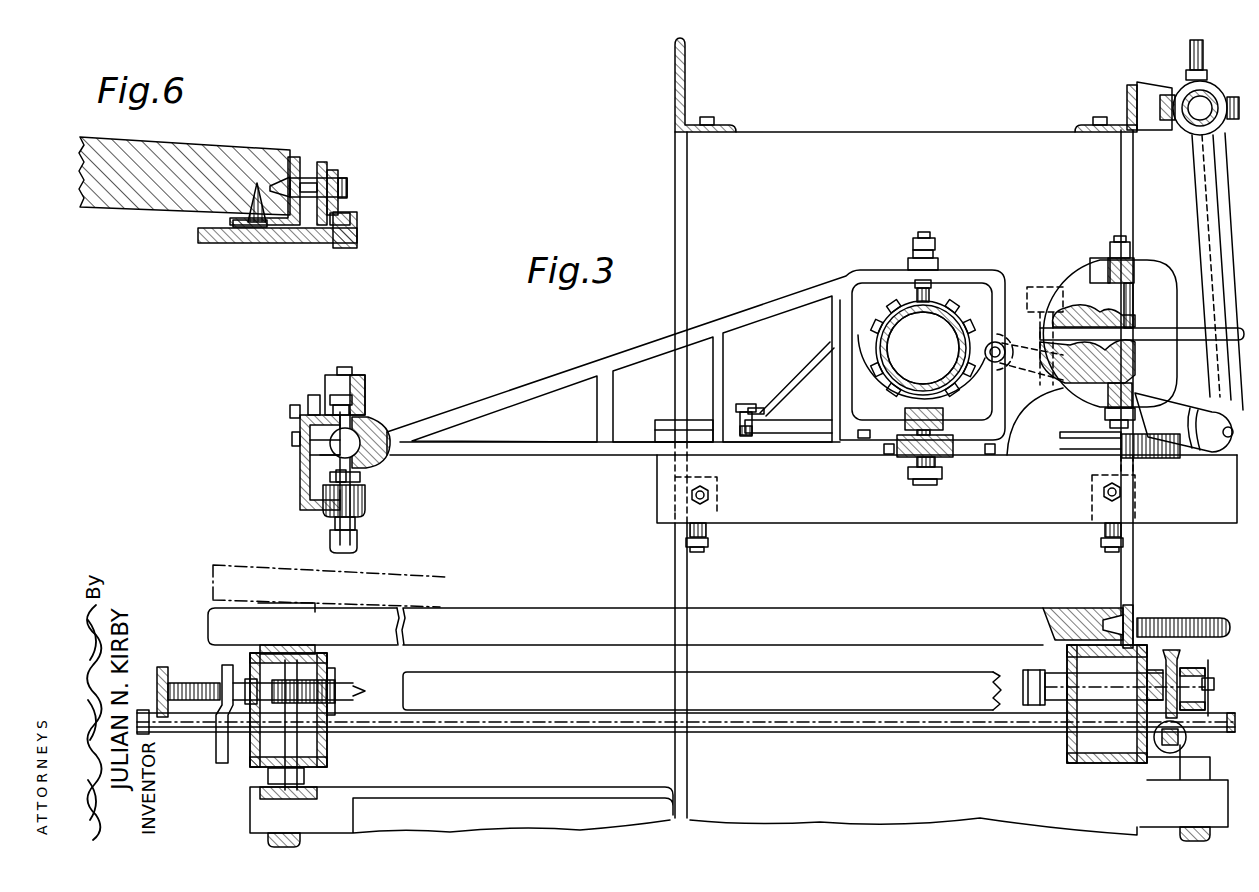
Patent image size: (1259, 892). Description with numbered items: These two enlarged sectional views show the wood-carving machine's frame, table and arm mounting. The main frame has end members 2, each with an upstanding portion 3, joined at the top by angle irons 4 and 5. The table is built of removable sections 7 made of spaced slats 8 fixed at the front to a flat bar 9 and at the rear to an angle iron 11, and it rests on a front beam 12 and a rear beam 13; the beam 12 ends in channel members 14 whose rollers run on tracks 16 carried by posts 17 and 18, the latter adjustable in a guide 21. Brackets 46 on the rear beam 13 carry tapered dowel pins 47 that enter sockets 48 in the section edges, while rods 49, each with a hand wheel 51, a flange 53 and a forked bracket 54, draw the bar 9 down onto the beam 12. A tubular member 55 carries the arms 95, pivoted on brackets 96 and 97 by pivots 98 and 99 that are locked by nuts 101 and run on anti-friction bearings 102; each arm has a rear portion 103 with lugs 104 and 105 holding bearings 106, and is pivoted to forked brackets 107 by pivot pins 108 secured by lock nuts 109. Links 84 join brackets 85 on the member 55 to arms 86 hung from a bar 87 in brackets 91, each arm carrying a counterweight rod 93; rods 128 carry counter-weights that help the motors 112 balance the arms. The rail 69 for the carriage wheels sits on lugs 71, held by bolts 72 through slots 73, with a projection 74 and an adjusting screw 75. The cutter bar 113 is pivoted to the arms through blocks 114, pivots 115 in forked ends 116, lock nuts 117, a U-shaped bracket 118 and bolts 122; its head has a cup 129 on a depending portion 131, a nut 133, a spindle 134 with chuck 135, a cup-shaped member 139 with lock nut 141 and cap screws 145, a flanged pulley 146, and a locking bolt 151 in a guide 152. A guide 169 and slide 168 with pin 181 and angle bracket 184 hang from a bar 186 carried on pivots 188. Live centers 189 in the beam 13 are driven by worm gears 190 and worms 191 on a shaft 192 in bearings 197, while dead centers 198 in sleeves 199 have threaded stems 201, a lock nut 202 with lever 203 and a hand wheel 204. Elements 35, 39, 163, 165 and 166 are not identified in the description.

In FIG. 3, the end members 2 is at (525, 805).
In FIG. 3, the upstanding portion 3 is at (700, 585).
In FIG. 3, the angle iron 4 is at (684, 92).
In FIG. 3, the angle iron 5 is at (1127, 100).
In FIG. 6, the table sections 7 is at (143, 234).
In FIG. 3, the table sections 7 is at (533, 599).
In FIG. 6, the slats 8 is at (207, 143).
In FIG. 3, the slats 8 is at (455, 625).
In FIG. 3, the flat bar 9 is at (318, 648).
In FIG. 6, the angle iron 11 is at (298, 168).
In FIG. 3, the angle iron 11 is at (1122, 648).
In FIG. 3, the front supporting beam 12 is at (330, 738).
In FIG. 6, the rear supporting beam 13 is at (290, 249).
In FIG. 3, the rear supporting beam 13 is at (1086, 759).
In FIG. 3, the channel members 14 is at (730, 693).
In FIG. 3, the tracks 16 is at (808, 728).
In FIG. 3, the post 17 is at (300, 841).
In FIG. 3, the post 18 is at (1210, 836).
In FIG. 3, the guide 21 is at (1222, 816).
In FIG. 3, the thumb screw 35 is at (1207, 640).
In FIG. 3, the knurled nut 39 is at (1183, 617).
In FIG. 6, the angle irons or brackets 46 is at (350, 181).
In FIG. 3, the angle irons or brackets 46 is at (1135, 615).
In FIG. 6, the tapered dowel pins 47 is at (298, 196).
In FIG. 3, the tapered dowel pins 47 is at (1118, 630).
In FIG. 6, the sockets 48 is at (276, 183).
In FIG. 3, the sockets 48 is at (1112, 618).
In FIG. 3, the rods 49 is at (285, 737).
In FIG. 3, the hand wheel 51 is at (278, 798).
In FIG. 3, the flange 53 is at (303, 773).
In FIG. 3, the forked bracket 54 is at (270, 778).
In FIG. 3, the tubular supporting member 55 is at (923, 348).
In FIG. 3, the rail 69 is at (658, 505).
In FIG. 3, the lugs 71 is at (1090, 525).
In FIG. 3, the screws or bolts 72 is at (1105, 498).
In FIG. 3, the slots 73 is at (1108, 489).
In FIG. 3, the projection 74 is at (1122, 534).
In FIG. 3, the adjusting screw 75 is at (1123, 546).
In FIG. 3, the links 84 is at (1182, 445).
In FIG. 3, the brackets 85 is at (930, 335).
In FIG. 3, the arms 86 is at (1208, 303).
In FIG. 3, the bar 87 is at (1193, 118).
In FIG. 3, the brackets 91 is at (1160, 88).
In FIG. 3, the rod 93 is at (1200, 60).
In FIG. 3, the arms 95 is at (775, 303).
In FIG. 3, the bracket 96 is at (938, 300).
In FIG. 3, the bracket 97 is at (946, 440).
In FIG. 3, the pivot 98 is at (923, 235).
In FIG. 3, the pivot 99 is at (925, 488).
In FIG. 3, the lock nuts 101 is at (900, 478).
In FIG. 3, the anti-friction bearings 102 is at (890, 457).
In FIG. 3, the rearwardly extending portion 103 is at (1090, 280).
In FIG. 3, the lug 104 is at (1109, 320).
In FIG. 3, the lug 105 is at (1100, 361).
In FIG. 3, the anti-friction bearing 106 is at (1108, 386).
In FIG. 3, the forked brackets 107 is at (1100, 265).
In FIG. 3, the pivot pins 108 is at (1112, 432).
In FIG. 3, the lock nuts 109 is at (1142, 457).
In FIG. 3, the motors 112 is at (1156, 282).
In FIG. 3, the cutter bar 113 is at (305, 462).
In FIG. 3, the blocks 114 is at (390, 420).
In FIG. 3, the pivots 115 is at (336, 468).
In FIG. 3, the forked ends 116 is at (382, 466).
In FIG. 3, the lock nuts 117 is at (360, 482).
In FIG. 3, the U-shaped bracket 118 is at (300, 452).
In FIG. 3, the bolts 122 is at (297, 441).
In FIG. 3, the rods 128 is at (1183, 340).
In FIG. 3, the bearing-retaining cup 129 is at (366, 503).
In FIG. 3, the depending portion 131 is at (330, 473).
In FIG. 3, the nut 133 is at (356, 522).
In FIG. 3, the spindle 134 is at (357, 530).
In FIG. 3, the chuck 135 is at (358, 545).
In FIG. 3, the cup-shaped member 139 is at (336, 380).
In FIG. 3, the lock nut 141 is at (351, 371).
In FIG. 3, the cap screws 145 is at (358, 392).
In FIG. 3, the flanged pulley 146 is at (328, 461).
In FIG. 3, the locking bolt 151 is at (305, 409).
In FIG. 3, the casing or guide 152 is at (310, 410).
In FIG. 3, the screw 163 is at (292, 418).
In FIG. 3, the plate 165 is at (1080, 456).
In FIG. 3, the plate 166 is at (797, 462).
In FIG. 3, the slide 168 is at (862, 405).
In FIG. 3, the guide 169 is at (807, 425).
In FIG. 3, the pin 181 is at (890, 456).
In FIG. 3, the angle bracket 184 is at (990, 455).
In FIG. 3, the bar 186 is at (745, 426).
In FIG. 3, the pivots 188 is at (744, 413).
In FIG. 3, the live centers 189 is at (1000, 705).
In FIG. 3, the worm gear 190 is at (1182, 661).
In FIG. 3, the worm 191 is at (1187, 745).
In FIG. 3, the shaft 192 is at (1165, 752).
In FIG. 3, the bearings 197 is at (1156, 720).
In FIG. 3, the dead centers 198 is at (366, 691).
In FIG. 3, the sleeves 199 is at (282, 708).
In FIG. 3, the threaded stems 201 is at (186, 670).
In FIG. 3, the lock nut 202 is at (220, 680).
In FIG. 3, the hand lever 203 is at (216, 748).
In FIG. 3, the knurled finger grip 204 is at (159, 668).